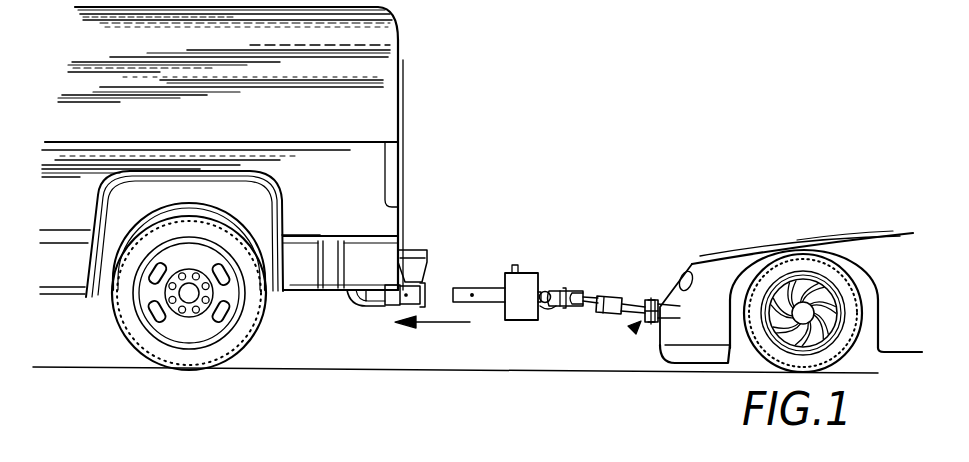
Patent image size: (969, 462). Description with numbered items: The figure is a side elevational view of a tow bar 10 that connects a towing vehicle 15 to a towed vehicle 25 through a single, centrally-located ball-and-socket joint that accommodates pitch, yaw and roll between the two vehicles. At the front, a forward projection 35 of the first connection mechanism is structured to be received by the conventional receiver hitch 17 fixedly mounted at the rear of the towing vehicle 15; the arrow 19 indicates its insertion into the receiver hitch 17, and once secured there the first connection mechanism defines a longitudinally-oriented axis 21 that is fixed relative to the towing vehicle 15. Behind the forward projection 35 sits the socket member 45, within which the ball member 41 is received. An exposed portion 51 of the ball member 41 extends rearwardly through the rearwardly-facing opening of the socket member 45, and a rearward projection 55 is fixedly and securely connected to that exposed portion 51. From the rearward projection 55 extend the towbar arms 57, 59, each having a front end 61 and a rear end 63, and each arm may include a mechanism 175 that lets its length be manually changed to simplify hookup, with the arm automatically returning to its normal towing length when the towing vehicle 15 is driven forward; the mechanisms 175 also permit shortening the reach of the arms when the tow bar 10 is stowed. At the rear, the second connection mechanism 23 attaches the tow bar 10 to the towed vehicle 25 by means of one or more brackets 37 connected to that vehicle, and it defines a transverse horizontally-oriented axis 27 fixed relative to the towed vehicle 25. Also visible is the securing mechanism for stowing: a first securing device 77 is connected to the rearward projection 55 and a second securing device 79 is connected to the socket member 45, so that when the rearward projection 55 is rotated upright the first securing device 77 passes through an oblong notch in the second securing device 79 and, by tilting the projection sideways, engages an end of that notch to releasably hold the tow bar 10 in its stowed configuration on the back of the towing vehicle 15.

The tow bar 10 is at (527, 246).
The towing vehicle 15 is at (390, 65).
The receiver hitch 17 is at (392, 303).
The arrow 19 is at (440, 325).
The longitudinally-oriented axis 21 is at (366, 307).
The second connection mechanism 23 is at (637, 326).
The towed vehicle 25 is at (760, 248).
The transverse horizontally-oriented axis 27 is at (644, 323).
The forward projection 35 is at (482, 290).
The bracket 37 is at (650, 325).
The ball member 41 is at (543, 287).
The socket member 45 is at (510, 312).
The exposed portion 51 is at (550, 313).
The rearward projection 55 is at (560, 308).
The towbar arm 57 is at (634, 300).
The towbar arm 59 is at (681, 265).
The front end 61 is at (580, 298).
The rear end 63 is at (688, 271).
The first securing device 77 is at (556, 290).
The second securing device 79 is at (515, 266).
The length-changing mechanism 175 is at (606, 306).